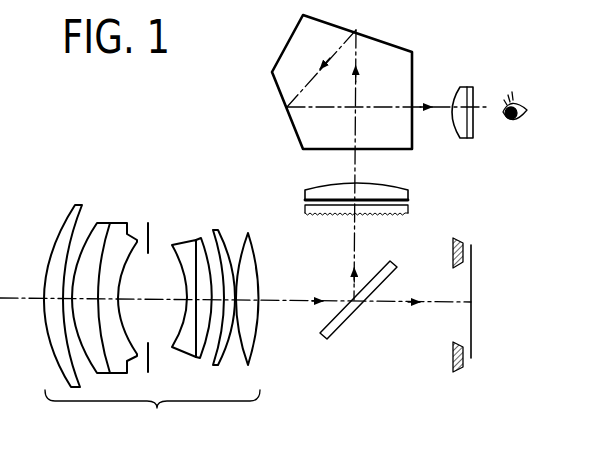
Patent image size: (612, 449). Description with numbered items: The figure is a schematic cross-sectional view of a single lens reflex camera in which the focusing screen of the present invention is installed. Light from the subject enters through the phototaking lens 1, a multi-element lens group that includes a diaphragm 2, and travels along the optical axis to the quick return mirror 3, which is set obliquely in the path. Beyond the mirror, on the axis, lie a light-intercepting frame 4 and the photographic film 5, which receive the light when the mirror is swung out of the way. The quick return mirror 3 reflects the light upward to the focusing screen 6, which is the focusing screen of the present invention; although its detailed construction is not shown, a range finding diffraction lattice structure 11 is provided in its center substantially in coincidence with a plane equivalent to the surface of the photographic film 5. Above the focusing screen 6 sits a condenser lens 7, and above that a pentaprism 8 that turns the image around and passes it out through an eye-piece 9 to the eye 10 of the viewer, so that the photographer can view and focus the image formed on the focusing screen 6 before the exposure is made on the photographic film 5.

The phototaking lens 1 is at (152, 322).
The diaphragm 2 is at (152, 227).
The quick return mirror 3 is at (323, 340).
The light-intercepting frame 4 is at (452, 357).
The photographic film 5 is at (472, 342).
The focusing screen 6 is at (410, 210).
The condenser lens 7 is at (410, 195).
The pentaprism 8 is at (395, 46).
The eye-piece 9 is at (467, 85).
The eye 10 is at (521, 97).
The range finding diffraction lattice structure 11 is at (340, 217).